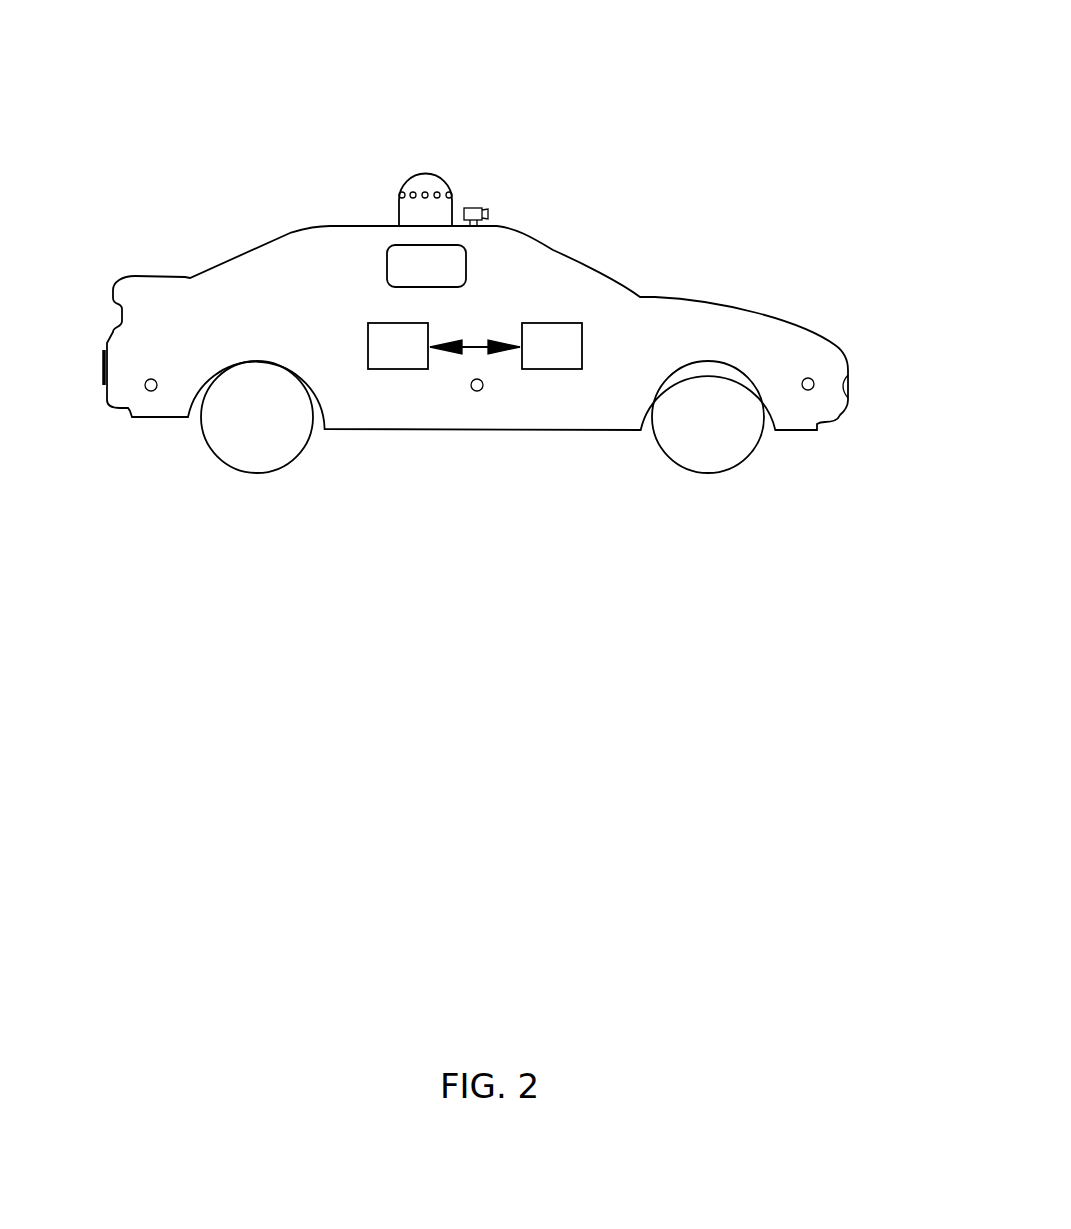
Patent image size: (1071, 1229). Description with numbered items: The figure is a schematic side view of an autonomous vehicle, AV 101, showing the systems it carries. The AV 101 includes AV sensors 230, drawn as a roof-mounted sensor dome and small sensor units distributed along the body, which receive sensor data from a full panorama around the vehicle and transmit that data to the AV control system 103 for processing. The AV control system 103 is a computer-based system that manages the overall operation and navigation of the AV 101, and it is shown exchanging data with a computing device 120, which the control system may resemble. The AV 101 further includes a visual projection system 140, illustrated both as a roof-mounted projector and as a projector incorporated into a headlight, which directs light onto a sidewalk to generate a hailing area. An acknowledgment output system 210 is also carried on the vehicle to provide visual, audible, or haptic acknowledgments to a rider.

The autonomous vehicle 101 is at (675, 73).
The AV sensors 230 is at (406, 160).
The visual projection system 140 is at (475, 207).
The acknowledgment output system 210 is at (407, 278).
The AV control system 103 is at (379, 359).
The computing device 120 is at (533, 359).